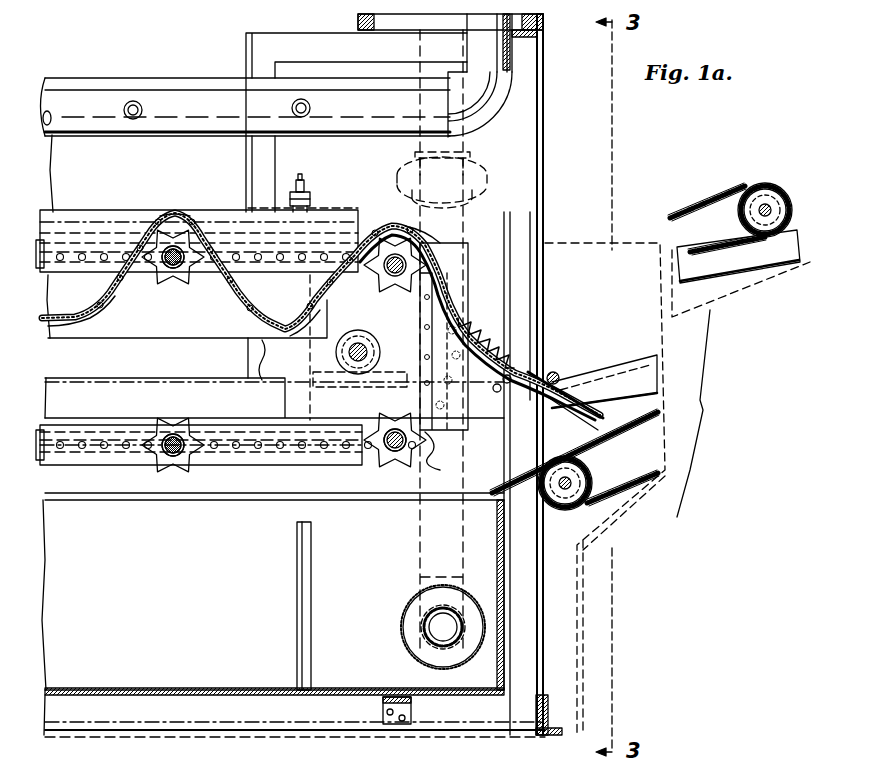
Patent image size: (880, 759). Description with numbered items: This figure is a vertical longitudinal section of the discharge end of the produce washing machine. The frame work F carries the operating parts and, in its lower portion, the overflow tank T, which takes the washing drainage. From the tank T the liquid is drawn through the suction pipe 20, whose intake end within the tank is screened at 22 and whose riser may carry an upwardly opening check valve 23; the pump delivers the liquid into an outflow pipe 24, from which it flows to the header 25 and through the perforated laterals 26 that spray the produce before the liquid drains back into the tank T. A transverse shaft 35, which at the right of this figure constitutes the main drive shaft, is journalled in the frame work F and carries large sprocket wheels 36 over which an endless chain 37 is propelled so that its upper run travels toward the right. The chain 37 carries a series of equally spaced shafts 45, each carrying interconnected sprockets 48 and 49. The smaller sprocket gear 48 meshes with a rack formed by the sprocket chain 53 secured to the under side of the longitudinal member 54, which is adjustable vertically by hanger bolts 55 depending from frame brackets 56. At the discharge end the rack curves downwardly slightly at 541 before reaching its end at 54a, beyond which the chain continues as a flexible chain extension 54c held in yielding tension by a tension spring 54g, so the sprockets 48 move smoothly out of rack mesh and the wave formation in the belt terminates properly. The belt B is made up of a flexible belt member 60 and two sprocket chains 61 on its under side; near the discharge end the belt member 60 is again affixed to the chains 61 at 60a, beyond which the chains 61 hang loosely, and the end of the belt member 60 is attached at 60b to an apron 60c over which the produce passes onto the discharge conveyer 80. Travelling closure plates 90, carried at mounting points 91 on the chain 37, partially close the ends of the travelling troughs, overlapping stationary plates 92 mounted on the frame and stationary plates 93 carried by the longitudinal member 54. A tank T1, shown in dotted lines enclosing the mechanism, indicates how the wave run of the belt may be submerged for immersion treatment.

The suction pipe 20 is at (460, 240).
The screen 22 is at (400, 615).
The check valve 23 is at (480, 172).
The outflow pipe 24 is at (497, 52).
The header 25 is at (192, 95).
The perforated laterals 26 is at (135, 100).
The transverse shaft 35 is at (360, 350).
The sprocket wheel 36 is at (262, 352).
The endless chain 37 is at (448, 454).
The shaft 45 is at (173, 268).
The sprocket gear 48 is at (150, 270).
The sprocket 49 is at (192, 270).
The sprocket chain 53 is at (230, 210).
The longitudinal member 54 is at (93, 222).
The rack end 54a is at (442, 232).
The chain extension 54c is at (445, 292).
The tension spring 54g is at (495, 352).
The curved rack portion 541 is at (370, 222).
The hanger bolt 55 is at (305, 192).
The frame bracket 56 is at (298, 158).
The belt member 60 is at (70, 318).
The attachment point 60a is at (325, 245).
The belt end attachment 60b is at (558, 375).
The apron 60c is at (580, 400).
The sprocket chain 61 is at (95, 315).
The discharge conveyer 80 is at (708, 215).
The travelling closure plate 90 is at (93, 278).
The mounting point 91 is at (273, 275).
The stationary closure plate 92 is at (158, 335).
The stationary closure plate 93 is at (132, 210).
The belt B is at (192, 204).
The frame work F is at (550, 600).
The overflow tank T is at (512, 646).
The tank T1 is at (752, 290).